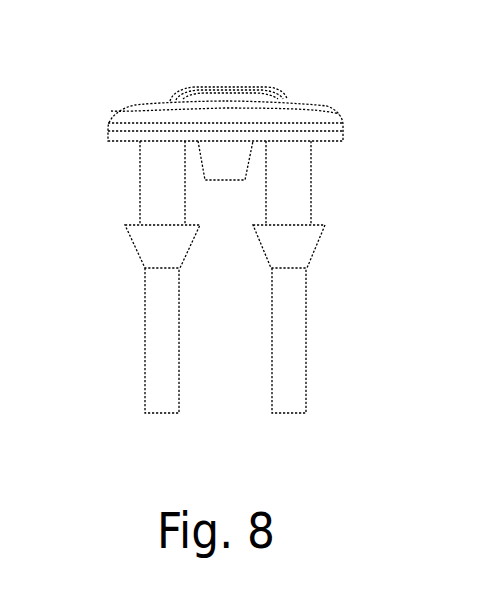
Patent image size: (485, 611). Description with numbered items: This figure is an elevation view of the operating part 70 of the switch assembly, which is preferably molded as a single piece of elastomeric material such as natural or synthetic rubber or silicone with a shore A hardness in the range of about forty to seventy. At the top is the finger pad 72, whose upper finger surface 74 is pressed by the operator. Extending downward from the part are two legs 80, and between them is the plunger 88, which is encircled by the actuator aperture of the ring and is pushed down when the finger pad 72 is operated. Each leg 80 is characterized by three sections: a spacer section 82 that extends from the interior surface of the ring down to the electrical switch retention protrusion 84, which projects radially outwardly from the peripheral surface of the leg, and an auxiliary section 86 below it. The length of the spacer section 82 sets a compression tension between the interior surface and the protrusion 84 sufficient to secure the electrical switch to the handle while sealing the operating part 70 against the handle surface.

The operating part 70 is at (336, 99).
The finger pad 72 is at (255, 87).
The finger surface 74 is at (225, 86).
The legs 80 is at (265, 277).
The spacer section 82 is at (305, 185).
The electrical switch retention protrusion 84 is at (305, 260).
The auxiliary section 86 is at (306, 297).
The plunger 88 is at (225, 159).